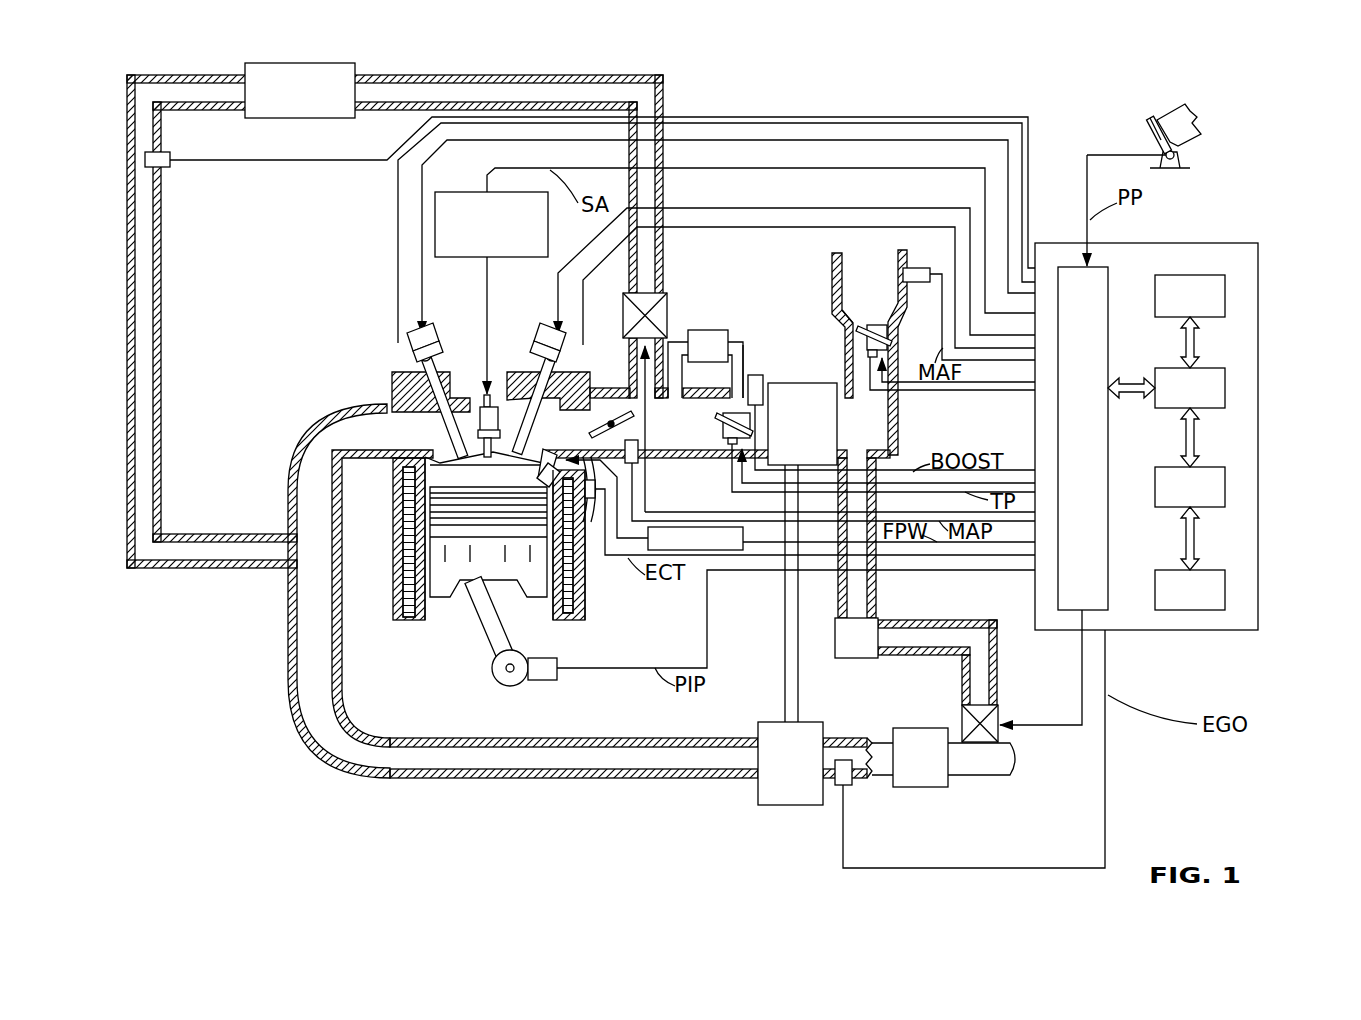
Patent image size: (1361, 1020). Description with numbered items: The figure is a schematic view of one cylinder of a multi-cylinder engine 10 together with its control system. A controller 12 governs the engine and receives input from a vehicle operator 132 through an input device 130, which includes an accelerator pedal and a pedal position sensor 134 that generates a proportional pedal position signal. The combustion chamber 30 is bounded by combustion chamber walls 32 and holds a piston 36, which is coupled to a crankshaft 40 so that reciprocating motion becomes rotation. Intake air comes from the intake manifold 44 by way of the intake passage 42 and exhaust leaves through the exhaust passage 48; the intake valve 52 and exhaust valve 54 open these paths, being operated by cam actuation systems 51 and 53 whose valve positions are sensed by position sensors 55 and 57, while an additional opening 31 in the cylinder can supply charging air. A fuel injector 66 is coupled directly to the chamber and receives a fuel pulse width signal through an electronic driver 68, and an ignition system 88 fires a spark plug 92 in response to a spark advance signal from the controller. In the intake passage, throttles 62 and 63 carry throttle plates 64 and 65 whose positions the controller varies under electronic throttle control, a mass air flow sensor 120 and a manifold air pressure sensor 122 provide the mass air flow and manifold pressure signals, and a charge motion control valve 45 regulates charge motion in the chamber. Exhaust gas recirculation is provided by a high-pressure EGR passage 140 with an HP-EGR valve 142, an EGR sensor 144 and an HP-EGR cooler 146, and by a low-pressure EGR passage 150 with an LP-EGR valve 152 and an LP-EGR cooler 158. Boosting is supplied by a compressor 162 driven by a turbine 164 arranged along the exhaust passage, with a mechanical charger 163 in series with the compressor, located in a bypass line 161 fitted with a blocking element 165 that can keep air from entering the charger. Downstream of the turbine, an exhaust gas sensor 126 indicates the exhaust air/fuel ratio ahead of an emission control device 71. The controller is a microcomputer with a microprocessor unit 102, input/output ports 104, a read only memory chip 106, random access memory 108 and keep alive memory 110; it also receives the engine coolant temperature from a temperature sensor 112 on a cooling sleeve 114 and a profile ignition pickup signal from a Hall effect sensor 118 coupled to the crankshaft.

The engine 10 is at (328, 322).
The controller 12 is at (1172, 471).
The combustion chamber 30 is at (463, 473).
The additional opening 31 is at (594, 458).
The combustion chamber walls 32 is at (433, 607).
The piston 36 is at (473, 568).
The crankshaft 40 is at (498, 687).
The intake passage 42 is at (869, 352).
The intake manifold 44 is at (717, 423).
The charge motion control valve 45 is at (617, 412).
The exhaust passage 48 is at (651, 591).
The cam actuation system 51 is at (547, 333).
The intake valve 52 is at (530, 447).
The cam actuation system 53 is at (435, 335).
The exhaust valve 54 is at (393, 420).
The position sensor 55 is at (567, 362).
The position sensor 57 is at (407, 367).
The throttle 62 is at (718, 416).
The throttle 63 is at (845, 316).
The throttle plate 64 is at (724, 432).
The throttle plate 65 is at (866, 335).
The fuel injector 66 is at (537, 478).
The electronic driver 68 is at (744, 535).
The emission control device 71 is at (920, 757).
The ignition system 88 is at (445, 192).
The spark plug 92 is at (490, 393).
The microprocessor unit 102 is at (1228, 393).
The input/output ports 104 is at (1112, 275).
The read only memory chip 106 is at (1228, 293).
The random access memory 108 is at (1228, 487).
The keep alive memory 110 is at (1228, 590).
The temperature sensor 112 is at (591, 499).
The cooling sleeve 114 is at (575, 583).
The Hall effect sensor 118 is at (547, 682).
The mass air flow sensor 120 is at (917, 268).
The manifold air pressure sensor 122 is at (638, 460).
The exhaust gas sensor 126 is at (853, 787).
The input device 130 is at (1203, 175).
The vehicle operator 132 is at (1200, 122).
The pedal position sensor 134 is at (1190, 158).
The high-pressure EGR passage 140 is at (560, 76).
The HP-EGR valve 142 is at (667, 315).
The EGR sensor 144 is at (168, 168).
The HP-EGR cooler 146 is at (300, 90).
The low-pressure EGR passage 150 is at (965, 618).
The LP-EGR valve 152 is at (1003, 712).
The LP-EGR cooler 158 is at (856, 638).
The bypass line 161 is at (745, 345).
The compressor 162 is at (802, 552).
The mechanical charger 163 is at (707, 313).
The turbine 164 is at (790, 763).
The blocking element 165 is at (755, 376).